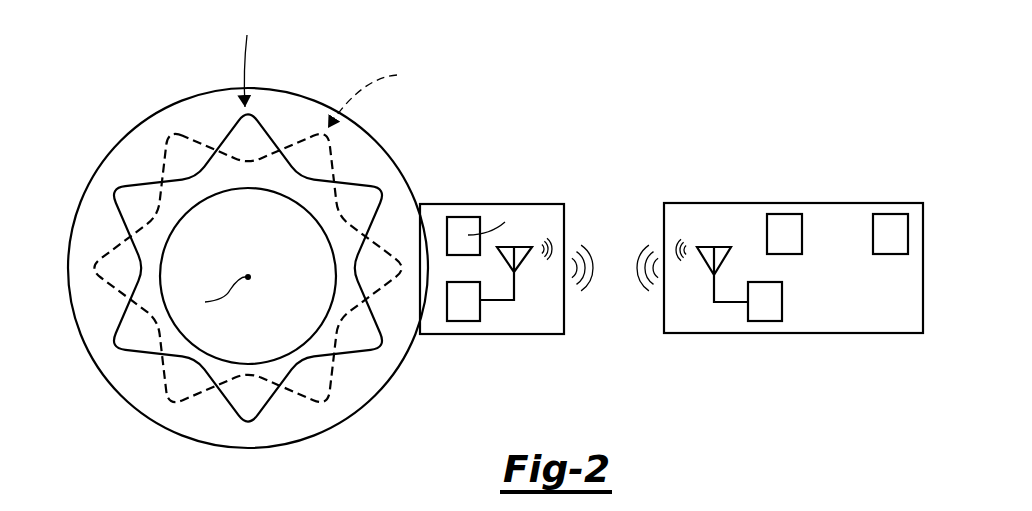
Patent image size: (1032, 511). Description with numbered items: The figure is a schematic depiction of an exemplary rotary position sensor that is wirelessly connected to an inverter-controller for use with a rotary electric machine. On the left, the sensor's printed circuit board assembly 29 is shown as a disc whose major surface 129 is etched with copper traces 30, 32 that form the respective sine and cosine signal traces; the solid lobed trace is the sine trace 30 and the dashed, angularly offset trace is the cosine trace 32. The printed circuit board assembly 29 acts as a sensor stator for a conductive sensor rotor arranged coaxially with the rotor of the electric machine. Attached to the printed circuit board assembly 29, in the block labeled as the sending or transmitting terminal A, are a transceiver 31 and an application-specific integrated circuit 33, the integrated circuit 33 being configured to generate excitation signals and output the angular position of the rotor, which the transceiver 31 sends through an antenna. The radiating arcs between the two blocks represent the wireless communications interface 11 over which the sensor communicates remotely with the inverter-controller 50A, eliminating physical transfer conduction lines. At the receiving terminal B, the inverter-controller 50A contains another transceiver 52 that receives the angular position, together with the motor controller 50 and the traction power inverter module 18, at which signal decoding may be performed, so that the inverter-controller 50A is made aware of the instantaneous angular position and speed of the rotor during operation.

The printed circuit board assembly 29 is at (246, 231).
The copper trace 30 is at (108, 215).
The copper trace 32 is at (157, 150).
The major surface 129 is at (368, 165).
The ASIC 33 is at (463, 217).
The transceiver 31 is at (462, 321).
The wireless communications interface 11 is at (613, 300).
The inverter-controller 50A is at (792, 203).
The motor controller 50 is at (784, 234).
The traction power inverter module 18 is at (890, 234).
The transceiver 52 is at (765, 321).
The sending/transmitting terminal A is at (510, 238).
The receiving terminal B is at (793, 238).